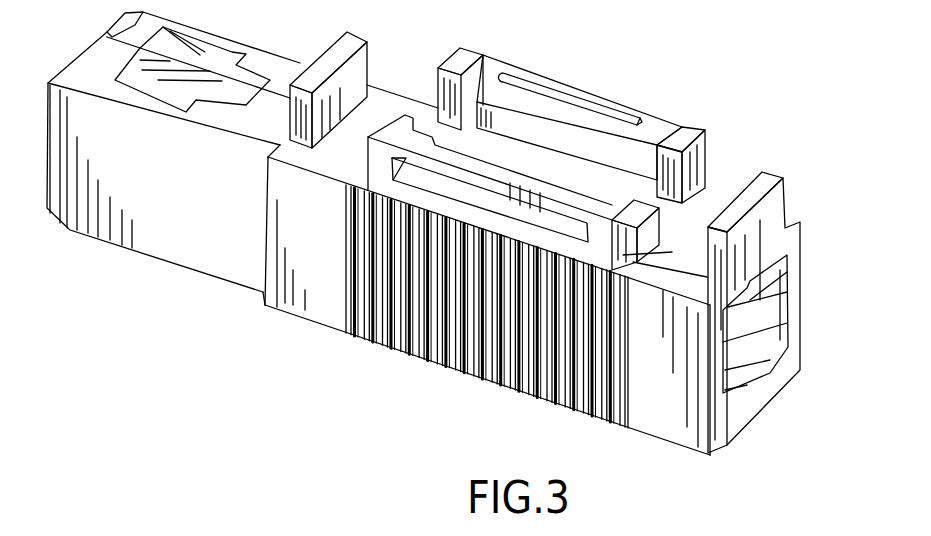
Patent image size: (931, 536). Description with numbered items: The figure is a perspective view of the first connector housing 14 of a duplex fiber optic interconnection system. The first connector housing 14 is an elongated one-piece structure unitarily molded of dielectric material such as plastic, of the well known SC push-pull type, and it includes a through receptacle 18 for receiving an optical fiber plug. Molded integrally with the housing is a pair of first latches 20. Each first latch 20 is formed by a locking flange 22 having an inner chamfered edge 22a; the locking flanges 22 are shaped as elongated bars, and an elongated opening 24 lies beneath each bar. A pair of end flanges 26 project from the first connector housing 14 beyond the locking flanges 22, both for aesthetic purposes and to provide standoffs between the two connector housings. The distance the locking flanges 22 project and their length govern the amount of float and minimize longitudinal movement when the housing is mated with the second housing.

The first connector housing 14 is at (297, 294).
The through receptacle 18 is at (764, 342).
The first latch 20 is at (600, 87).
The locking flange 22 is at (437, 164).
The inner chamfered edge 22a is at (545, 182).
The elongated opening 24 is at (522, 104).
The end flange 26 is at (348, 80).